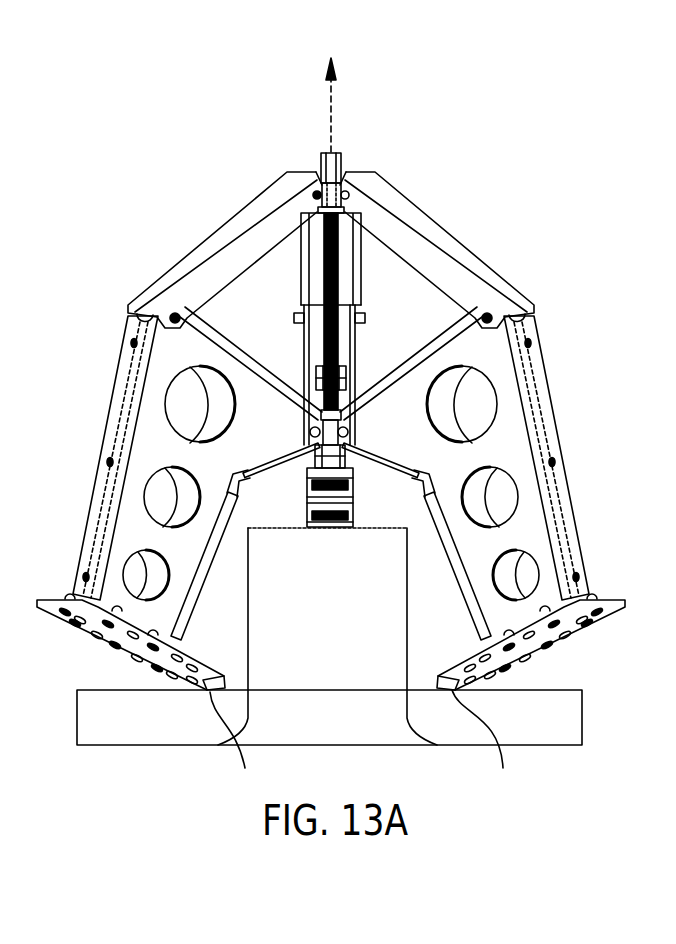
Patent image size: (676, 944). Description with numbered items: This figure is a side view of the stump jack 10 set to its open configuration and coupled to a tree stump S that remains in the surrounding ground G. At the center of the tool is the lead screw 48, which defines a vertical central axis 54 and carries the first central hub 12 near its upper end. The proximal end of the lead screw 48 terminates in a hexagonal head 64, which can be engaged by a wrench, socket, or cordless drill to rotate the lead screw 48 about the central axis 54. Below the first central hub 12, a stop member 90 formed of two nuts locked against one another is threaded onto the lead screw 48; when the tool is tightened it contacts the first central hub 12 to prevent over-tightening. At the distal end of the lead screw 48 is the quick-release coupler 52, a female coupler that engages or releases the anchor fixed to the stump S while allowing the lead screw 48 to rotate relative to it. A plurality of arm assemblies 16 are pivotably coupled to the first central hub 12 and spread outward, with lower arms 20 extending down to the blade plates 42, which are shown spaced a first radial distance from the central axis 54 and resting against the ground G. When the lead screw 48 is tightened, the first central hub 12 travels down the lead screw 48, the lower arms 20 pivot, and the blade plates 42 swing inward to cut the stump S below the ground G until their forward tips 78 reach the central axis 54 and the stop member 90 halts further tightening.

The stump jack 10 is at (185, 142).
The central axis 54 is at (327, 115).
The hexagonal head 64 is at (340, 168).
The first central hub 12 is at (347, 193).
The arm assemblies 16 is at (205, 253).
The lower arms 20 is at (115, 427).
The lead screw 48 is at (322, 285).
The stop member 90 is at (358, 353).
The quick-release coupler 52 is at (343, 502).
The stump S is at (402, 614).
The blade plates 42 is at (127, 653).
The ground G is at (563, 689).
The forward tips 78 is at (362, 742).